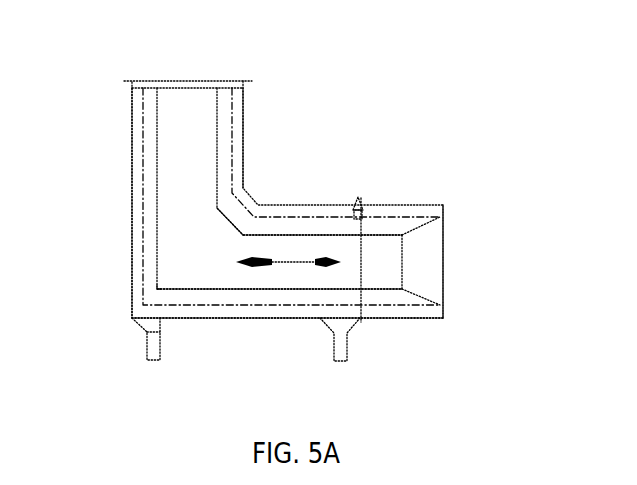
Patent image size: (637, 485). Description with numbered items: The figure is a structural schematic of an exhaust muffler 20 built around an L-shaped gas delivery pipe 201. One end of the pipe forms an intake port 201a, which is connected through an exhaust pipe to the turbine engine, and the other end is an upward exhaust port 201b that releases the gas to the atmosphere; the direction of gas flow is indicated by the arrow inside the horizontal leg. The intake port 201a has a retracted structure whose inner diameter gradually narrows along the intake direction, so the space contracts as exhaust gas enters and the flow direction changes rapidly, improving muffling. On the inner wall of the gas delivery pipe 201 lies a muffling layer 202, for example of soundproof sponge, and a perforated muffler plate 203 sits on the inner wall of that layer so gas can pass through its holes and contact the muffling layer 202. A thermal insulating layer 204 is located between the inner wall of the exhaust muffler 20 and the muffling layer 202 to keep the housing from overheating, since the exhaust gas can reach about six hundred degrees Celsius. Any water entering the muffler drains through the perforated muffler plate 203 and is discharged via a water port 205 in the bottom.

The exhaust muffler 20 is at (443, 319).
The L-shaped gas delivery pipe 201 is at (160, 168).
The intake port 201a is at (443, 265).
The exhaust port 201b is at (190, 77).
The muffling layer 202 is at (300, 230).
The perforated muffler plate 203 is at (230, 222).
The thermal insulating layer 204 is at (397, 217).
The water port 205 is at (275, 318).